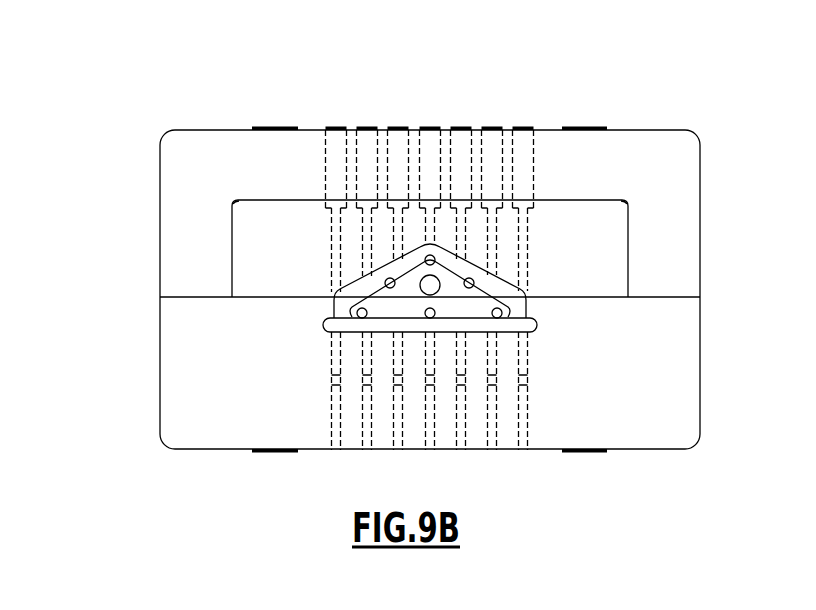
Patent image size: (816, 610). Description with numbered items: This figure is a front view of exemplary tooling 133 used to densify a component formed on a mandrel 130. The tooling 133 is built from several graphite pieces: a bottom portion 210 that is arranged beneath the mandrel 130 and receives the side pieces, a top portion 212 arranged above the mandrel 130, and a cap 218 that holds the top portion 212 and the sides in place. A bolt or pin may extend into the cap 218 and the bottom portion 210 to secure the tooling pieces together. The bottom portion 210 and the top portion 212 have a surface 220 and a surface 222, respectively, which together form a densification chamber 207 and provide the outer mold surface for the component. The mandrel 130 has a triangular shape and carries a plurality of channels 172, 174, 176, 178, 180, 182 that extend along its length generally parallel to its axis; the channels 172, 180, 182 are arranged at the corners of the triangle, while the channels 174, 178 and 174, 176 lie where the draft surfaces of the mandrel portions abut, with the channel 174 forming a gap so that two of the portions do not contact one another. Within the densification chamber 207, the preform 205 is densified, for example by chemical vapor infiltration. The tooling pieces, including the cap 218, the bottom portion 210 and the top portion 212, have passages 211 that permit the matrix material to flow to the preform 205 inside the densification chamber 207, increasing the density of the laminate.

The tooling 133 is at (159, 88).
The cap 218 is at (617, 148).
The bottom portion 210 is at (215, 408).
The top portion 212 is at (253, 255).
The passages 211 is at (433, 150).
The surface 220 is at (398, 260).
The surface 222 is at (385, 333).
The mandrel 130 is at (427, 283).
The channel 172 is at (430, 260).
The channel 178 is at (390, 283).
The channel 176 is at (469, 283).
The channel 180 is at (362, 316).
The channel 174 is at (431, 318).
The channel 182 is at (497, 316).
The preform 205 is at (521, 305).
The densification chamber 207 is at (516, 286).